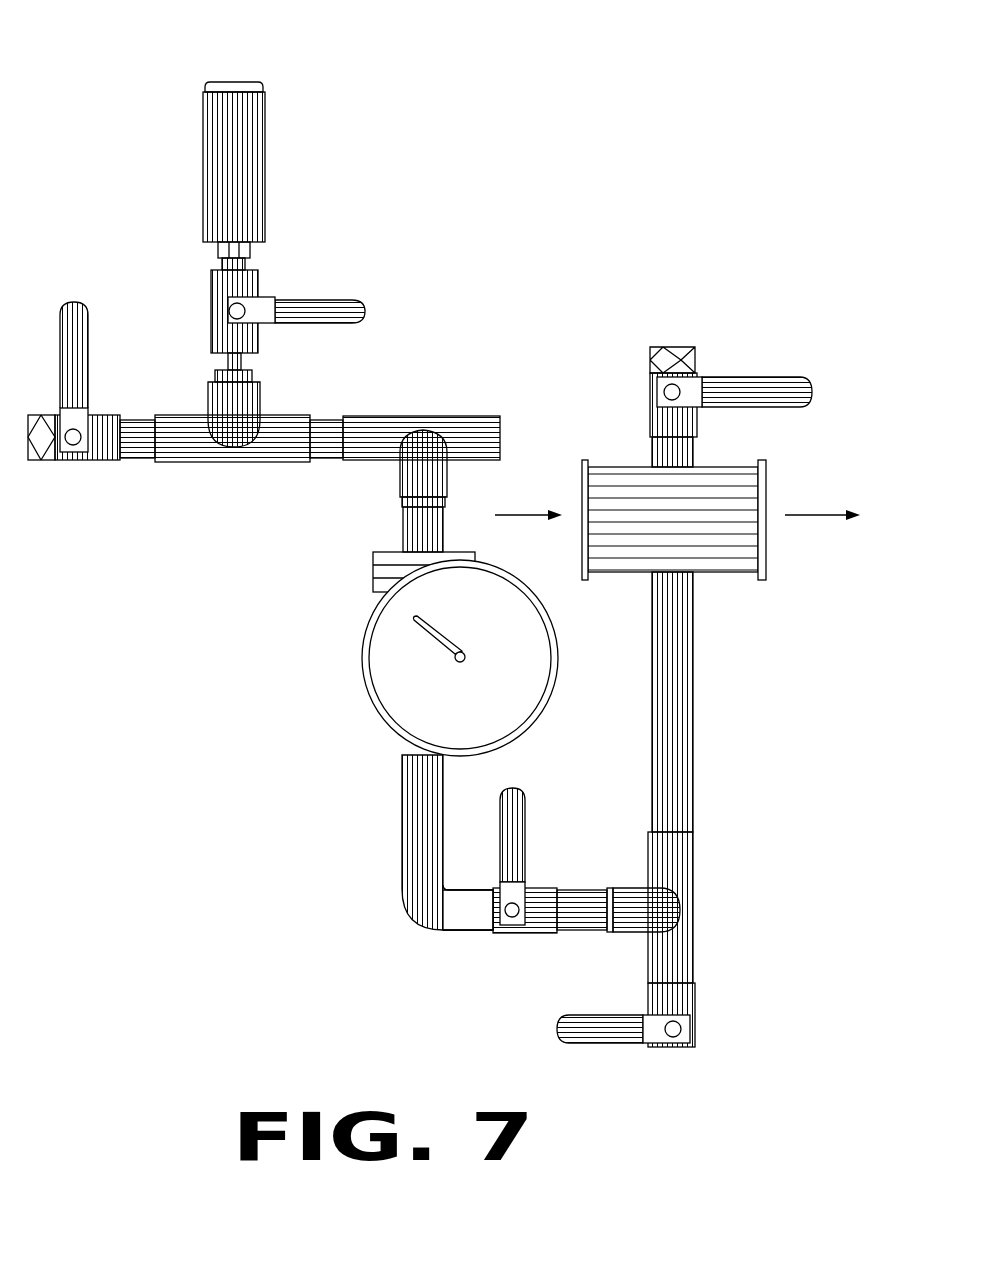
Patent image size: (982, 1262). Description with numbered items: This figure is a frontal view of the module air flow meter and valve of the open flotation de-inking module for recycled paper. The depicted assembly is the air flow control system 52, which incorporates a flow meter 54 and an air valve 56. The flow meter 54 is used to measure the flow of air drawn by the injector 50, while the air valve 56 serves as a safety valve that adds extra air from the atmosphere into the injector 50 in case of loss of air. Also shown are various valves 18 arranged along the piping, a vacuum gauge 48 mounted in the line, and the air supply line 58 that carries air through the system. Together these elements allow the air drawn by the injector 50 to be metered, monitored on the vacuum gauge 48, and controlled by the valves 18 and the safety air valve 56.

The air flow control system 52 is at (108, 136).
The flow meter 54 is at (262, 170).
The valves 18 is at (296, 305).
The air valve 56 is at (82, 458).
The vacuum gauge 48 is at (385, 722).
The air supply line 58 is at (412, 925).
The injector 50 is at (713, 572).